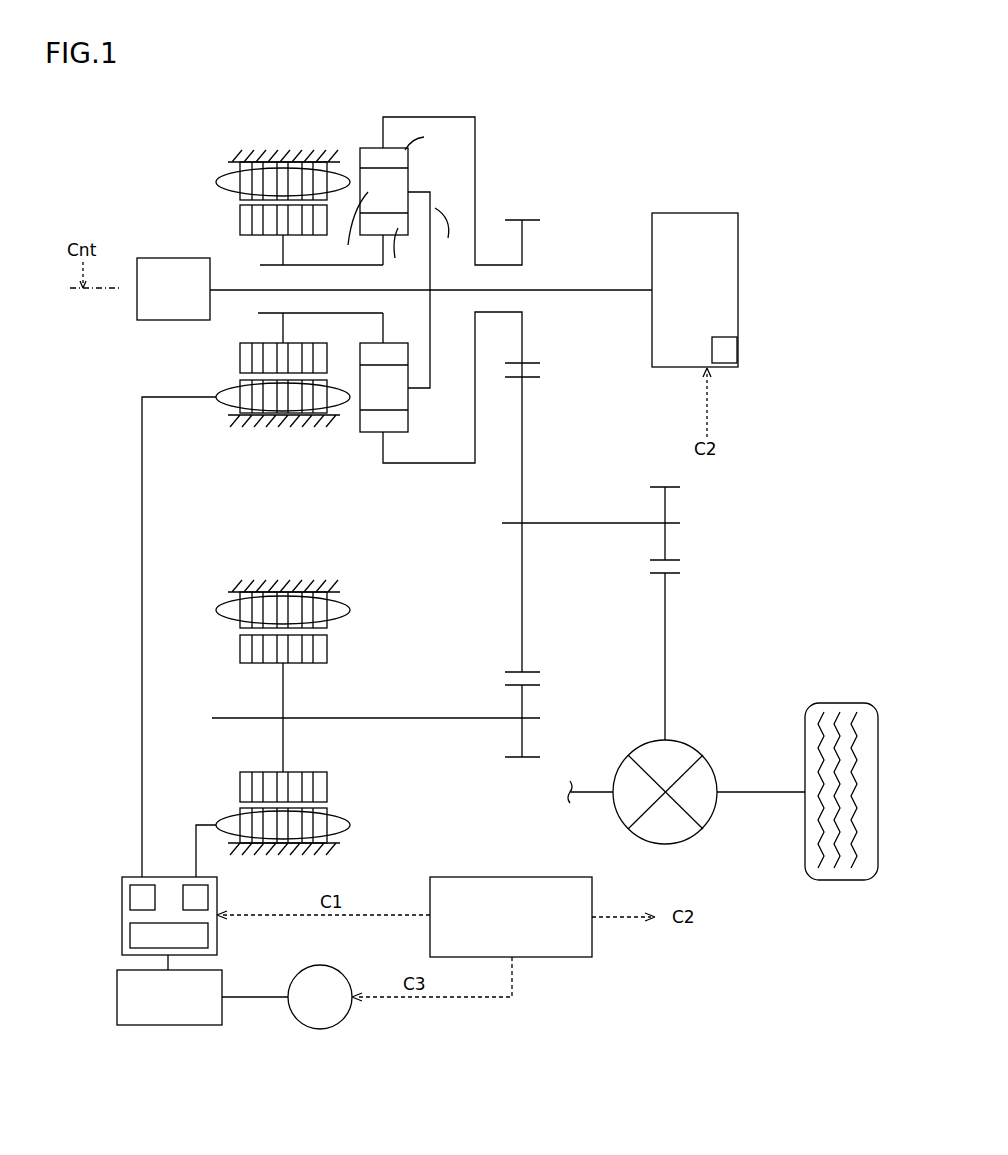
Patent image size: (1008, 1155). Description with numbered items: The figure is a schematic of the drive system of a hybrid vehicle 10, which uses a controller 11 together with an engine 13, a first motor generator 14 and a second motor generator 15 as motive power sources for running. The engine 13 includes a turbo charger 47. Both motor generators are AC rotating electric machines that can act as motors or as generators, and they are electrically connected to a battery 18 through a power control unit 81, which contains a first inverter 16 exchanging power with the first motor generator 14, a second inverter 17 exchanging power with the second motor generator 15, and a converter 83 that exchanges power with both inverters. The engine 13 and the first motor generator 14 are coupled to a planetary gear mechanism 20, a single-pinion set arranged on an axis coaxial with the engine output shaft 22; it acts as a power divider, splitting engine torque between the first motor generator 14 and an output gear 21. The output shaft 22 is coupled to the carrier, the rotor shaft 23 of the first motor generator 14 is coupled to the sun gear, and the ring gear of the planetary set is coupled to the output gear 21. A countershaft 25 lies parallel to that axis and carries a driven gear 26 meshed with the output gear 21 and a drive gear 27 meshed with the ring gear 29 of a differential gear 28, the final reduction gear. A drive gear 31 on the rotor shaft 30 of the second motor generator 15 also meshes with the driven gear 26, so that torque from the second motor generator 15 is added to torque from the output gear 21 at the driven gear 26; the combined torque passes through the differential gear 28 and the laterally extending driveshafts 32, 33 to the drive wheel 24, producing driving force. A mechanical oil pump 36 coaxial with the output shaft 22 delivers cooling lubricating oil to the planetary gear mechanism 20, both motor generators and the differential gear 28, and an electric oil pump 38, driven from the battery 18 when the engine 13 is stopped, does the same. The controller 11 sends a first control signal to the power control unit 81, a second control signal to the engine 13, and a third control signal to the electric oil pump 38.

The hybrid vehicle 10 is at (654, 140).
The controller 11 is at (555, 877).
The engine 13 is at (740, 242).
The first motor generator 14 is at (217, 172).
The second motor generator 15 is at (217, 597).
The first inverter 16 is at (130, 895).
The second inverter 17 is at (215, 893).
The battery 18 is at (215, 968).
The planetary gear mechanism 20 is at (351, 128).
The output gear 21 is at (535, 361).
The output shaft 22 is at (620, 287).
The rotor shaft 23 is at (262, 265).
The drive wheel 24 is at (846, 702).
The countershaft 25 is at (580, 528).
The driven gear 26 is at (535, 380).
The drive gear 27 is at (680, 490).
The differential gear 28 is at (688, 740).
The ring gear 29 is at (680, 575).
The rotor shaft 30 is at (218, 716).
The drive gear 31 is at (530, 688).
The driveshaft 32 is at (590, 795).
The driveshaft 33 is at (760, 795).
The mechanical oil pump 36 is at (172, 258).
The electric oil pump 38 is at (335, 968).
The turbo charger 47 is at (739, 350).
The power control unit 81 is at (122, 912).
The converter 83 is at (130, 937).